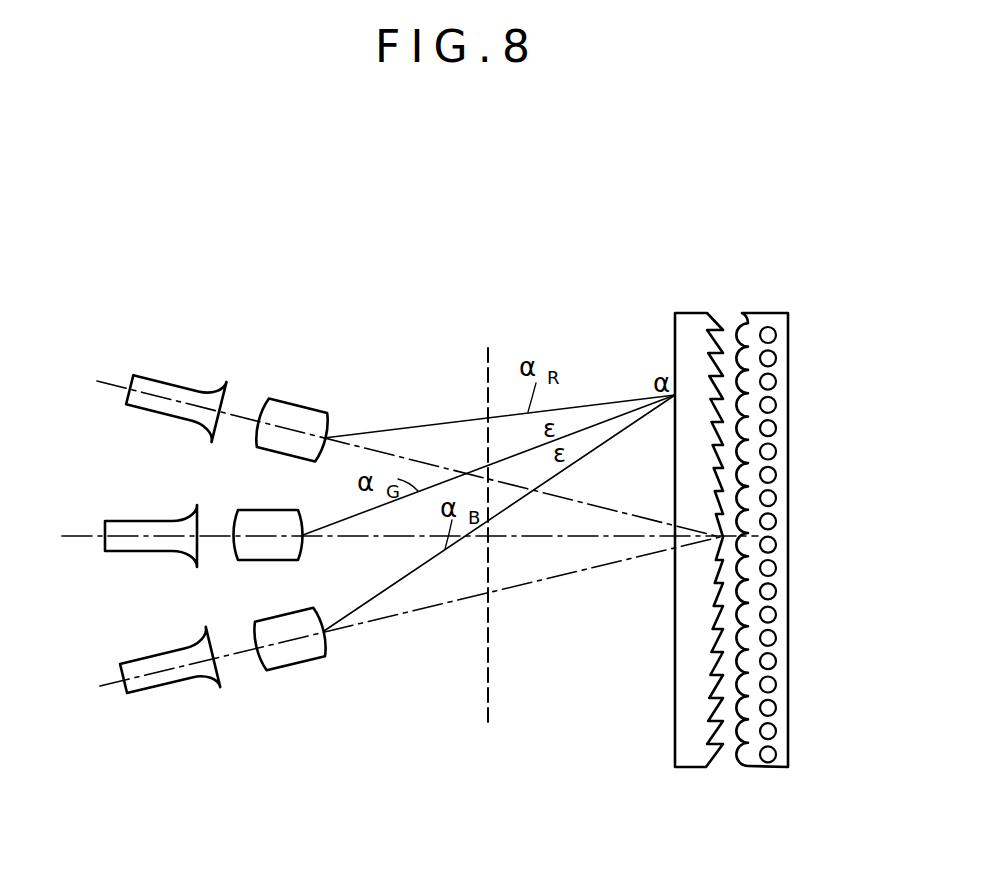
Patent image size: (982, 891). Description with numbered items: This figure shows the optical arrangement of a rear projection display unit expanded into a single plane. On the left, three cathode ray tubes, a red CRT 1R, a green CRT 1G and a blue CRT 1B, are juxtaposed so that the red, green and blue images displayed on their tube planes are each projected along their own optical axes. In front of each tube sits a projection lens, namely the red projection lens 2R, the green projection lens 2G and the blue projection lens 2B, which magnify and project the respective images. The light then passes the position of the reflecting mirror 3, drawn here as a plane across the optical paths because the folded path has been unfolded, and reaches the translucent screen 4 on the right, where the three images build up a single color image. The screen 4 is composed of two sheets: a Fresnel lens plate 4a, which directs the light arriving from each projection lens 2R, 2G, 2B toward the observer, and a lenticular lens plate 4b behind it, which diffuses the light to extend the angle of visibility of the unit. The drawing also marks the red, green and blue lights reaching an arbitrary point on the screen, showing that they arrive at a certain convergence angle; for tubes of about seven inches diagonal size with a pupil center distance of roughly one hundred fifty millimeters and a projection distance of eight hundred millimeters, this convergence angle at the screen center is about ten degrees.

The red CRT 1R is at (173, 384).
The green CRT 1G is at (133, 552).
The blue CRT 1B is at (168, 685).
The red projection lens 2R is at (301, 407).
The green projection lens 2G is at (257, 561).
The blue projection lens 2B is at (298, 664).
The reflecting mirror 3 is at (490, 349).
The translucent screen 4 is at (787, 306).
The Fresnel lens plate 4a is at (676, 340).
The lenticular lens plate 4b is at (790, 350).